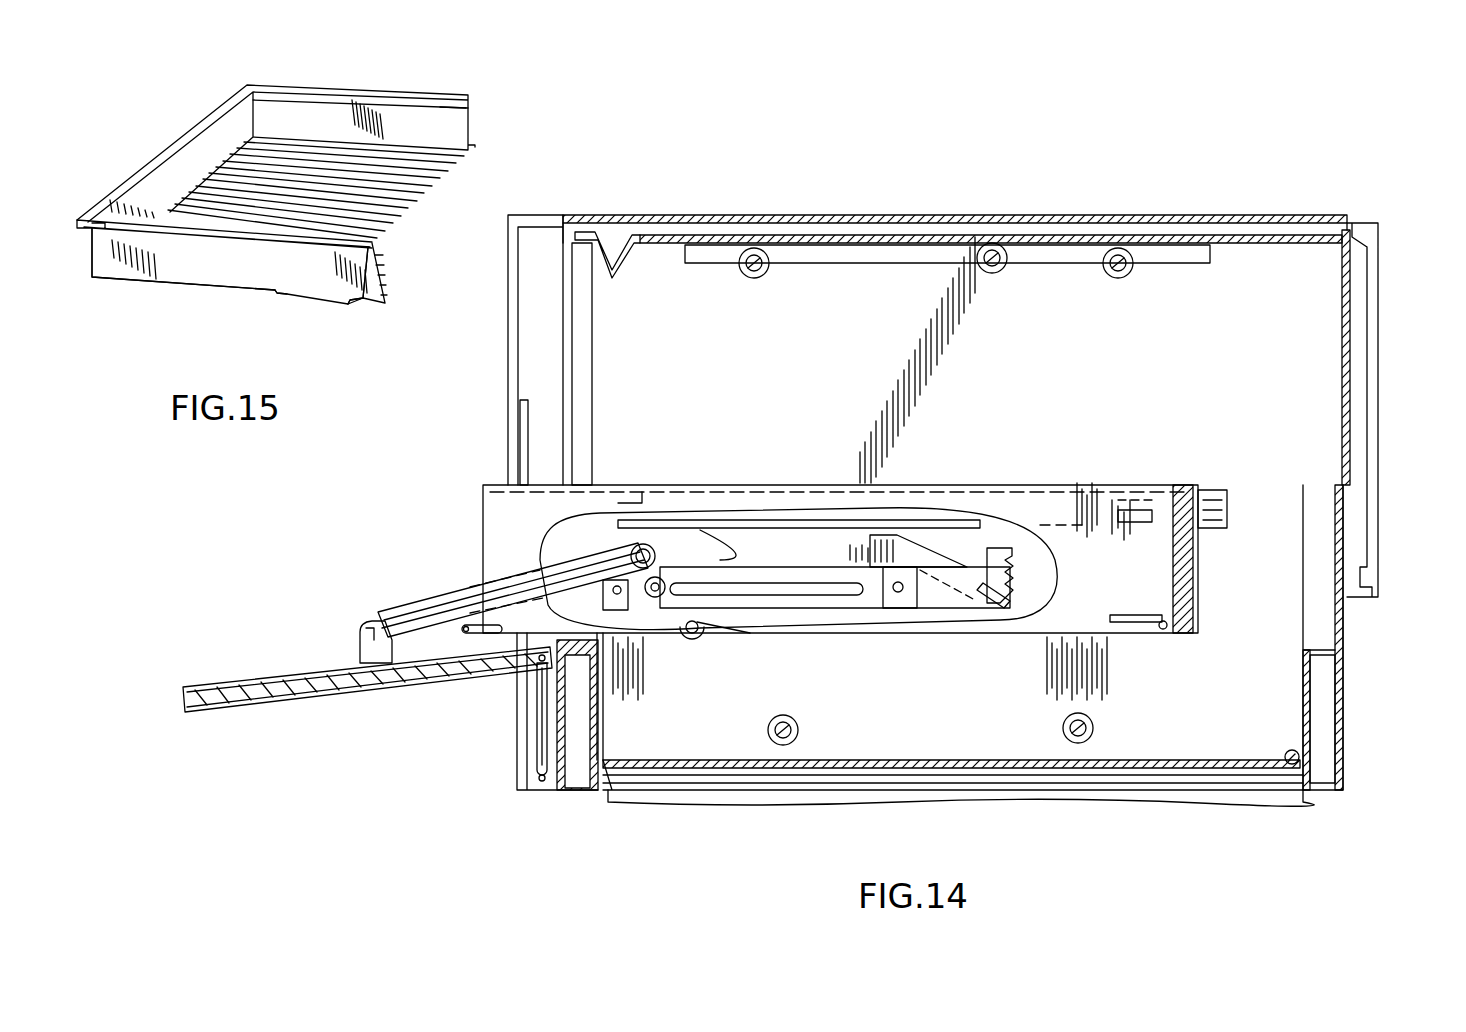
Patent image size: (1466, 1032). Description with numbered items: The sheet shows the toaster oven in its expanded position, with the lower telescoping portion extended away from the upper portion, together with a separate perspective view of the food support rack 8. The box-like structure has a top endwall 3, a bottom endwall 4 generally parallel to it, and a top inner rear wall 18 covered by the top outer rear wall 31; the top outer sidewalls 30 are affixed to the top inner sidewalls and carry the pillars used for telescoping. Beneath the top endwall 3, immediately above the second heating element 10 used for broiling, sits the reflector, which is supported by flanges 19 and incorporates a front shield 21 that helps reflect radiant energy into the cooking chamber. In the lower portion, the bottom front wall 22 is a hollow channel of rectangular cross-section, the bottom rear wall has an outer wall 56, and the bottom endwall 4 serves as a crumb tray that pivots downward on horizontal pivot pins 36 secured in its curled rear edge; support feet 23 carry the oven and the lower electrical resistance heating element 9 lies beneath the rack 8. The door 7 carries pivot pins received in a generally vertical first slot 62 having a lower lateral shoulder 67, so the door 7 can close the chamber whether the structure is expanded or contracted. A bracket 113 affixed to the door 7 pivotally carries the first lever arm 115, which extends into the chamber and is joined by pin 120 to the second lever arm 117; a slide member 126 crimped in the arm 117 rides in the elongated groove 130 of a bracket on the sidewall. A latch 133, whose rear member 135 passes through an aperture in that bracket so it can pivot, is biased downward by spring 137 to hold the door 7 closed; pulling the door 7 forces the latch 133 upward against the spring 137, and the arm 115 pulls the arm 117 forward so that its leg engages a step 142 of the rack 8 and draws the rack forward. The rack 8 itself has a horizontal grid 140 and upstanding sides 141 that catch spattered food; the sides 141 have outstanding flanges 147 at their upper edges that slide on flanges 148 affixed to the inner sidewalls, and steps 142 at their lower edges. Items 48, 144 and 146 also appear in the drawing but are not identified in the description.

In FIG. 14, the top endwall 3 is at (848, 215).
In FIG. 14, the bottom endwall 4 is at (883, 760).
In FIG. 14, the door 7 is at (233, 707).
In FIG. 15, the food support rack 8 is at (470, 126).
In FIG. 14, the food support rack 8 is at (481, 522).
In FIG. 14, the electrical resistance heating element 9 is at (798, 725).
In FIG. 14, the second heating element 10 is at (767, 272).
In FIG. 14, the top inner rear wall 18 is at (1340, 338).
In FIG. 14, the flanges 19 is at (1210, 246).
In FIG. 14, the front shield 21 is at (630, 253).
In FIG. 14, the bottom front wall 22 is at (597, 730).
In FIG. 14, the support feet 23 is at (1303, 800).
In FIG. 14, the top outer sidewalls 30 is at (508, 308).
In FIG. 14, the top outer rear wall 31 is at (1380, 412).
In FIG. 14, the horizontal pivot pins 36 is at (1290, 749).
In FIG. 14, the screw 48 is at (990, 272).
In FIG. 14, the outer wall 56 is at (1343, 642).
In FIG. 14, the first slot 62 is at (535, 730).
In FIG. 14, the lower lateral shoulder 67 is at (541, 790).
In FIG. 14, the bracket 113 is at (357, 640).
In FIG. 14, the first lever arm 115 is at (403, 605).
In FIG. 14, the second lever arm 117 is at (700, 633).
In FIG. 14, the pin 120 is at (656, 551).
In FIG. 14, the slide member 126 is at (667, 580).
In FIG. 14, the elongated groove 130 is at (823, 580).
In FIG. 14, the latch 133 is at (958, 553).
In FIG. 14, the rear member 135 is at (1012, 606).
In FIG. 14, the spring 137 is at (1012, 582).
In FIG. 15, the grid 140 is at (470, 166).
In FIG. 14, the grid 140 is at (1127, 622).
In FIG. 15, the upstanding sides 141 is at (215, 268).
In FIG. 15, the steps 142 is at (398, 142).
In FIG. 15, the front wall of tray 144 is at (170, 282).
In FIG. 15, the side wall of tray 146 is at (425, 243).
In FIG. 15, the outstanding flanges 147 is at (380, 93).
In FIG. 14, the flanges 148 is at (1227, 492).